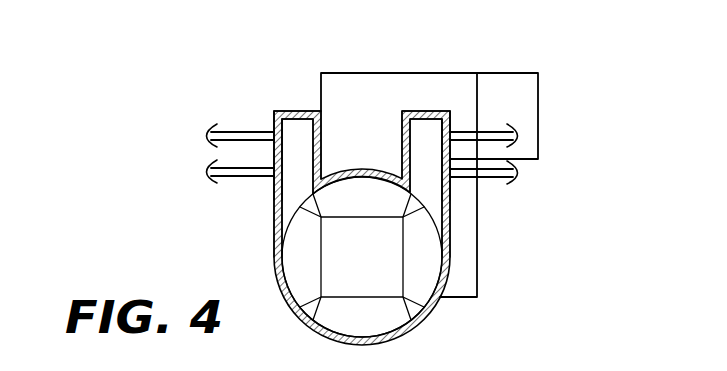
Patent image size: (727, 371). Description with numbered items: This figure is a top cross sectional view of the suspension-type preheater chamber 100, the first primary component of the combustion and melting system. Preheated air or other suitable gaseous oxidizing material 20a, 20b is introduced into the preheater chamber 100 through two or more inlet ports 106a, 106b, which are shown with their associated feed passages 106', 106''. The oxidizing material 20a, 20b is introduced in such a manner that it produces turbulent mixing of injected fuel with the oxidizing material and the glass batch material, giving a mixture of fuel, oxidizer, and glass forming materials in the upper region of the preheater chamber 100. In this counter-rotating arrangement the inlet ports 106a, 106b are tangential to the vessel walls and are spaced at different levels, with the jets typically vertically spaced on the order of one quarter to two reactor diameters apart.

The preheater chamber 100 is at (430, 326).
The gaseous oxidizing material 20a is at (297, 106).
The gaseous oxidizing material 20b is at (425, 102).
The first lead wire 106' is at (364, 132).
The second lead wire 106'' is at (363, 172).
The inlet port 106a is at (271, 202).
The inlet port 106b is at (458, 205).